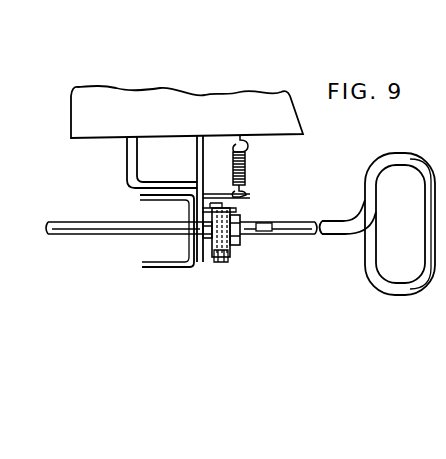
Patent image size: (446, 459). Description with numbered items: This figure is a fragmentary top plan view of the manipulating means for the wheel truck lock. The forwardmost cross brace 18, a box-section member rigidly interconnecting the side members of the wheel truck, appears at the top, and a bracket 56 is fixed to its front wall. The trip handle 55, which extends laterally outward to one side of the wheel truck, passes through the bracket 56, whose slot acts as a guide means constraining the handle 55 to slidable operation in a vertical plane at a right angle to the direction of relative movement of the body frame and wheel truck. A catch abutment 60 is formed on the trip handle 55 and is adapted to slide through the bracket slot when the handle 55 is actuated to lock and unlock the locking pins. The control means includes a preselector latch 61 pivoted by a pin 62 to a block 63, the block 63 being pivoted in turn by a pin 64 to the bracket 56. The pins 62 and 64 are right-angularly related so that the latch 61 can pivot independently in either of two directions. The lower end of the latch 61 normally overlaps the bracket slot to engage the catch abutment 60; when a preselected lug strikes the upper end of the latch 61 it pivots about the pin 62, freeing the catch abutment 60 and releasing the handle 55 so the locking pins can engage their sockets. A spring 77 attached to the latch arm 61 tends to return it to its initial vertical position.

The cross brace 18 is at (185, 113).
The trip handle 55 is at (82, 237).
The bracket 56 is at (167, 267).
The catch abutment 60 is at (270, 218).
The preselector latch 61 is at (240, 243).
The pin 62 is at (207, 228).
The block 63 is at (223, 222).
The pin 64 is at (224, 264).
The spring 77 is at (247, 170).